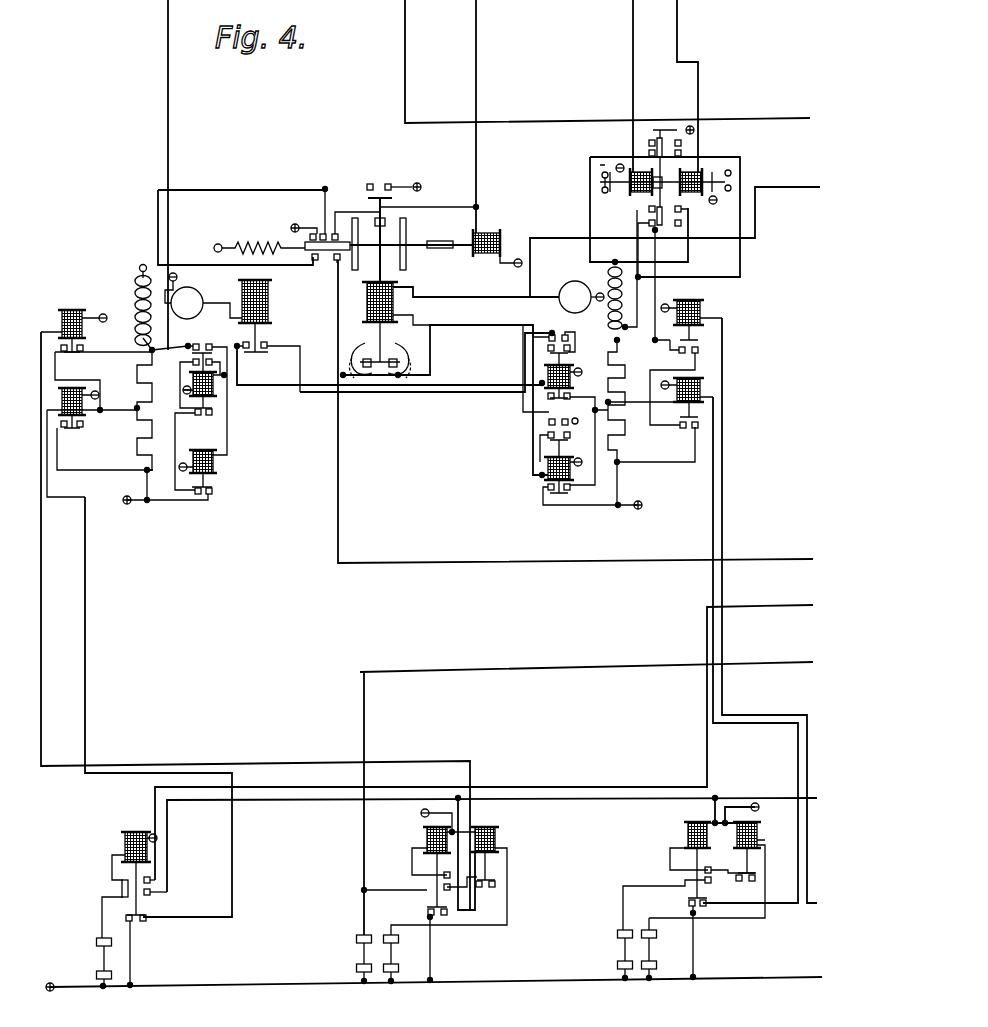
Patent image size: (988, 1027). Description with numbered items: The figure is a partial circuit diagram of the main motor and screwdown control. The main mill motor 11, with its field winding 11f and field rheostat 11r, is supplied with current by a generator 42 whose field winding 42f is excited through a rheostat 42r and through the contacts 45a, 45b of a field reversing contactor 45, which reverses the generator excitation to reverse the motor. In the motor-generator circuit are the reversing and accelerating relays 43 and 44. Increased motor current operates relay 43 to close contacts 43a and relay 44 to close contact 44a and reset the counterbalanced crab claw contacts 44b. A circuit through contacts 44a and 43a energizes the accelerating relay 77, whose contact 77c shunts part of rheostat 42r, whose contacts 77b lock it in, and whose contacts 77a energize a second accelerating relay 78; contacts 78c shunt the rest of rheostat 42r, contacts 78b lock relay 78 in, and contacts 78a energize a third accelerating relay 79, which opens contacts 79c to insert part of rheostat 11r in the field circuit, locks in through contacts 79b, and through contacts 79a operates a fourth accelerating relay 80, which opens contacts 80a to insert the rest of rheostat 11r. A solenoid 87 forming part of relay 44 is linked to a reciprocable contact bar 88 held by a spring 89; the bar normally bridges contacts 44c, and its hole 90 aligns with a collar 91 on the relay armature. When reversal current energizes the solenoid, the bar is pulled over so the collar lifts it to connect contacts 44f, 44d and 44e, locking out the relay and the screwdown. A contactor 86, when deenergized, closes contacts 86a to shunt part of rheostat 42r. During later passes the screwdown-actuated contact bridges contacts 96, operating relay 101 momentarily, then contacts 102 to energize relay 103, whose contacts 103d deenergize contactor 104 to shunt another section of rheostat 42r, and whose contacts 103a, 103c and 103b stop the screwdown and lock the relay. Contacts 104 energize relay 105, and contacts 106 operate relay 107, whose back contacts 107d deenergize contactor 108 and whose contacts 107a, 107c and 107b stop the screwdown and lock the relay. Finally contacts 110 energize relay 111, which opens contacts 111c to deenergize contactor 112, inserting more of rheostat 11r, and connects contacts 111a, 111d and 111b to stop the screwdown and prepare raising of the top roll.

The main mill motor 11 is at (190, 300).
The field winding 11f is at (134, 296).
The field rheostat 11r is at (137, 443).
The generator 42 is at (566, 288).
The field winding 42f is at (607, 308).
The rheostat 42r is at (626, 385).
The relay 43 is at (268, 312).
The contacts 43a is at (267, 343).
The relay 44 is at (394, 310).
The contact 44a is at (388, 183).
The counterbalanced crab claw contacts 44b is at (382, 380).
The contacts 44c is at (320, 261).
The contacts 44d is at (313, 233).
The contacts 44e is at (336, 233).
The contacts 44f is at (305, 245).
The field reversing contactor 45 is at (665, 201).
The contacts 45a is at (645, 160).
The contacts 45b is at (681, 140).
The accelerating relay 77 is at (540, 386).
The contacts 77a is at (552, 334).
The contacts 77b is at (548, 350).
The contact 77c is at (575, 398).
The second accelerating relay 78 is at (546, 468).
The contacts 78a is at (549, 424).
The contacts 78b is at (548, 437).
The contacts 78c is at (548, 488).
The third accelerating relay 79 is at (213, 392).
The contacts 79a is at (192, 343).
The contacts 79b is at (193, 360).
The contacts 79c is at (212, 412).
The fourth accelerating relay 80 is at (213, 463).
The contacts 80a is at (195, 490).
The contactor 86 is at (704, 314).
The contacts 86a is at (698, 349).
The solenoid 87 is at (487, 235).
The reciprocable contact bar 88 is at (420, 242).
The spring 89 is at (238, 247).
The hole 90 is at (379, 245).
The collar 91 is at (385, 222).
The contacts 96 is at (650, 960).
The relay 101 is at (758, 838).
The contacts 102 is at (617, 936).
The relay 103 is at (686, 836).
The contacts 103a is at (682, 872).
The contacts 103b is at (705, 870).
The contacts 103c is at (710, 877).
The contacts 103d is at (690, 910).
The contactor 104 is at (704, 386).
The relay 105 is at (499, 836).
The contacts 106 is at (357, 939).
The relay 107 is at (425, 840).
The contacts 107a is at (420, 880).
The contacts 107b is at (444, 874).
The contacts 107c is at (490, 888).
The back contacts 107d is at (426, 912).
The contactor 108 is at (62, 315).
The contacts 110 is at (95, 952).
The relay 111 is at (120, 848).
The contacts 111a is at (120, 887).
The contacts 111b is at (160, 880).
The contacts 111c is at (132, 922).
The contacts 111d is at (160, 893).
The contactor 112 is at (82, 406).